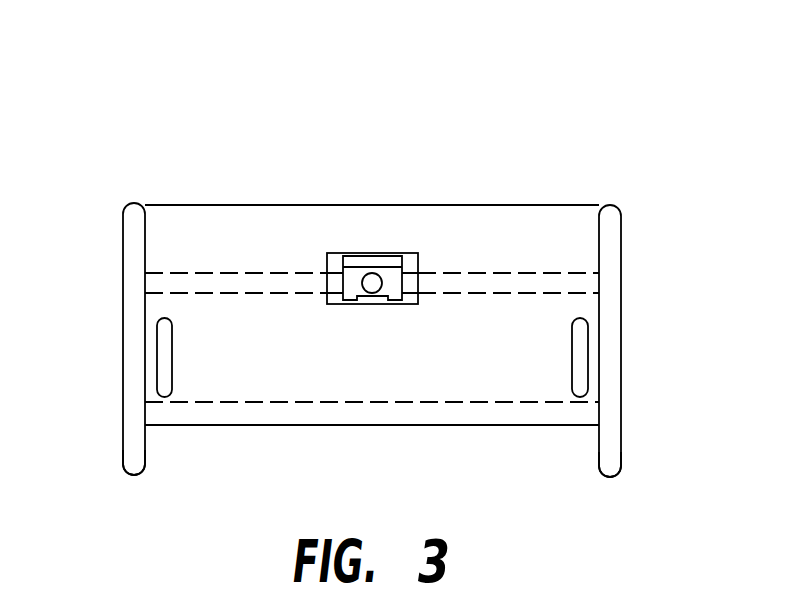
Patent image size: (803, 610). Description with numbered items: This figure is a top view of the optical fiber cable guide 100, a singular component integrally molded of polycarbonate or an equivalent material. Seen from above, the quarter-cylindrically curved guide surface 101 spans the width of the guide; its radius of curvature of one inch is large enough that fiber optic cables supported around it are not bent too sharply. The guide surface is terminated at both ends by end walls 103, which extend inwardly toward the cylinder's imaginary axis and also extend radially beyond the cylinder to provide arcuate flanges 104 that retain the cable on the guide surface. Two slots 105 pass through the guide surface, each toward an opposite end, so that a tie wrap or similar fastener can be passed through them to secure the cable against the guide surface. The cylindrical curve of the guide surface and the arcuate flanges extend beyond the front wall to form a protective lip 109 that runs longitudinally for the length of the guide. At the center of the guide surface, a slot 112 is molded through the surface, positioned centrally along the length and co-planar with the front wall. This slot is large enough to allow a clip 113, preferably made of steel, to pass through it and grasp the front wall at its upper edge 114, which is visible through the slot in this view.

The optical fiber cable guide 100 is at (183, 68).
The quarter-cylindrically curved guide surface 101 is at (396, 370).
The end walls 103 is at (123, 332).
The arcuate flanges 104 is at (140, 476).
The slots 105 is at (172, 373).
The protective lip 109 is at (530, 238).
The slot 112 is at (405, 253).
The clip 113 is at (371, 253).
The upper edge 114 is at (335, 282).